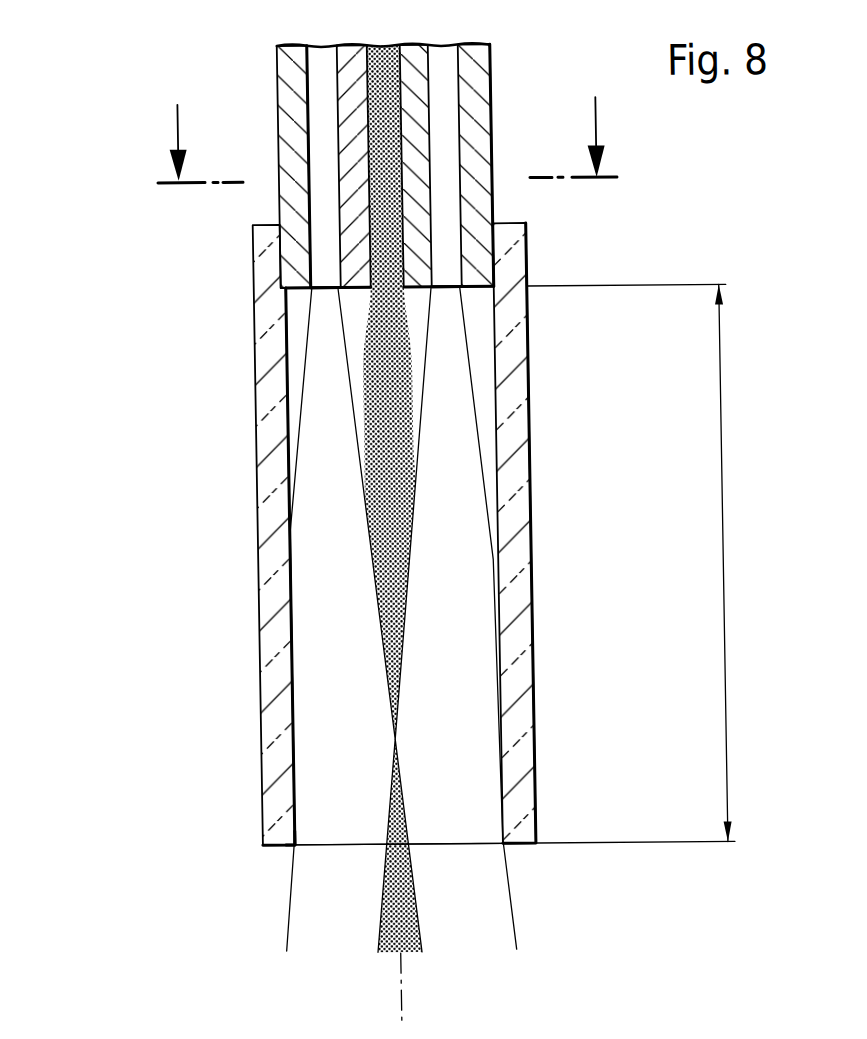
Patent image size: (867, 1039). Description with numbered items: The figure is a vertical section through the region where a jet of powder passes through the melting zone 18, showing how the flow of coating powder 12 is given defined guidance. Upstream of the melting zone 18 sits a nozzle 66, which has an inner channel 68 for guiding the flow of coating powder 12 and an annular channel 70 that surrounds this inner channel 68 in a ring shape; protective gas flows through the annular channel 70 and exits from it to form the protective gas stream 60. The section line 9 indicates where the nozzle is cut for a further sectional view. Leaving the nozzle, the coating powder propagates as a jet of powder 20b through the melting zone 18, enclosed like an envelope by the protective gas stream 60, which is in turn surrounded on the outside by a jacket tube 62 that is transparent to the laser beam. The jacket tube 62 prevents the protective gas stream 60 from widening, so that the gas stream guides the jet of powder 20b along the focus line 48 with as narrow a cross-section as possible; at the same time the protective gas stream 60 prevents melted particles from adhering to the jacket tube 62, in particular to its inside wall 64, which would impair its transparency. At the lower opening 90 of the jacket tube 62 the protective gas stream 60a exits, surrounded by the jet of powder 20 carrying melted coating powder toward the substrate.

The section line IX-IX 9 is at (388, 140).
The flow of coating powder 12 is at (386, 58).
The melting zone 18 is at (715, 565).
The jet of powder 20 is at (376, 940).
The jet of powder 20b is at (383, 343).
The focus line 48 is at (388, 1008).
The protective gas stream 60 is at (399, 587).
The protective gas stream 60a is at (467, 908).
The jacket tube 62 is at (258, 604).
The inside wall 64 is at (490, 369).
The nozzle 66 is at (276, 97).
The inner channel 68 is at (364, 72).
The annular channel 70 is at (438, 98).
The lower opening 90 is at (279, 840).